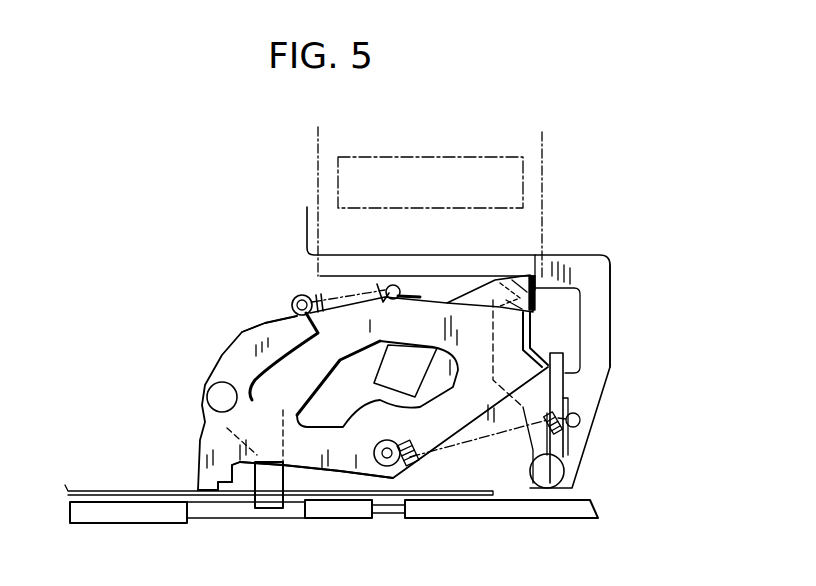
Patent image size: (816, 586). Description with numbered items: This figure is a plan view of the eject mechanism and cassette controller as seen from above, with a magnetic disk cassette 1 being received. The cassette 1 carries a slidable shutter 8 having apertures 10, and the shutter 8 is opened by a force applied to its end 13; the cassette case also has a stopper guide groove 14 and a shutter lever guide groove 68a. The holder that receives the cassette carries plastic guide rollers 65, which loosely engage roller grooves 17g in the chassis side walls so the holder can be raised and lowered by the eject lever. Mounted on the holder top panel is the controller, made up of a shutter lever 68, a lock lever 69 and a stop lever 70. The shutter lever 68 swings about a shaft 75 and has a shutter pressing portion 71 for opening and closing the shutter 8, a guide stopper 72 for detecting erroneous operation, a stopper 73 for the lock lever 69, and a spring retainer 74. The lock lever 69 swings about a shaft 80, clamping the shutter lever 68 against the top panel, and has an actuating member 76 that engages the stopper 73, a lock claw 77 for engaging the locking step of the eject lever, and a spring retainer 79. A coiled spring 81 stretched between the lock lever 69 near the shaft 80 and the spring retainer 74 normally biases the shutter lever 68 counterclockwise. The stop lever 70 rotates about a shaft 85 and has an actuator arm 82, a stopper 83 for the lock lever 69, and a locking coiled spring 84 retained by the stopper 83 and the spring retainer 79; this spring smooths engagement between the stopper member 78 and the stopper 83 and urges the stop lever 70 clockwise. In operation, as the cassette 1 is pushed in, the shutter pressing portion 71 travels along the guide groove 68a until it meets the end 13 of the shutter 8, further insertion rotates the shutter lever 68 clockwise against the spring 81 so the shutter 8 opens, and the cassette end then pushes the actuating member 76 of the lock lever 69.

The magnetic disk cassette 1 is at (527, 500).
The shutter 8 is at (544, 193).
The apertures 10 is at (455, 155).
The end of the shutter 13 is at (537, 283).
The stopper guide groove 14 is at (430, 250).
The roller grooves 17g is at (378, 522).
The guide rollers 65 is at (395, 520).
The shutter lever 68 is at (545, 450).
The shutter lever guide groove 68a is at (472, 297).
The lock lever 69 is at (315, 460).
The stop lever 70 is at (212, 363).
The shutter pressing portion 71 is at (611, 273).
The guide stopper 72 is at (598, 303).
The stopper 73 is at (562, 358).
The spring retainer 74 is at (570, 399).
The shaft 75 is at (555, 474).
The actuating member 76 is at (540, 352).
The lock claw 77 is at (228, 487).
The stopper member 78 is at (322, 333).
The spring retainer 79 is at (400, 285).
The shaft 80 is at (375, 453).
The coiled spring 81 is at (578, 425).
The actuator arm 82 is at (287, 508).
The stopper 83 is at (275, 322).
The locking coiled spring 84 is at (318, 295).
The shaft 85 is at (223, 403).